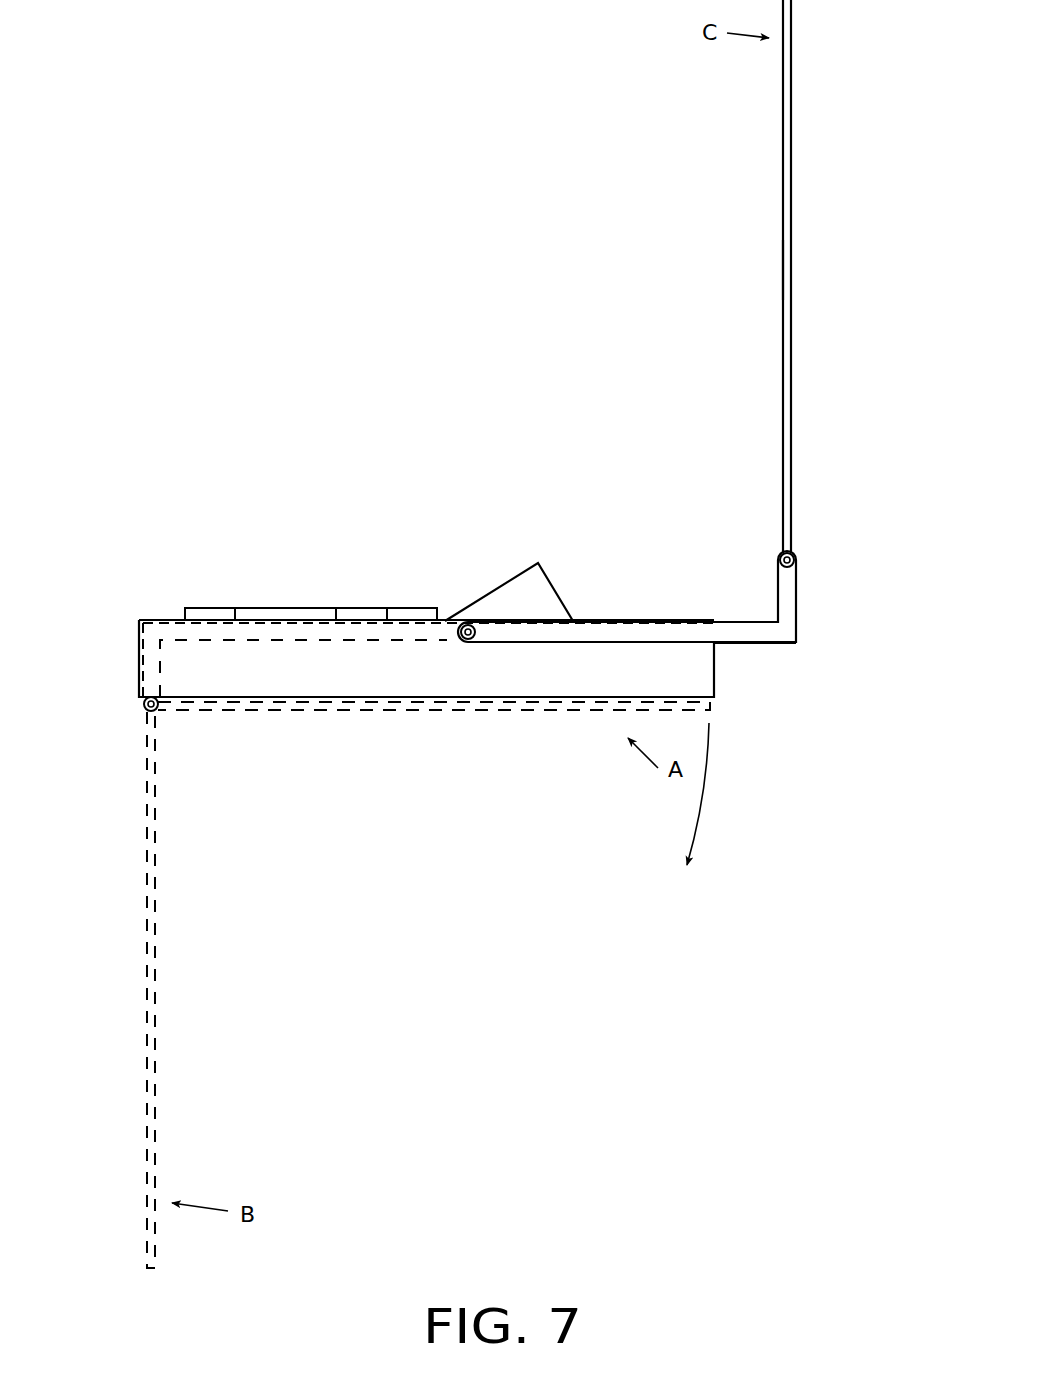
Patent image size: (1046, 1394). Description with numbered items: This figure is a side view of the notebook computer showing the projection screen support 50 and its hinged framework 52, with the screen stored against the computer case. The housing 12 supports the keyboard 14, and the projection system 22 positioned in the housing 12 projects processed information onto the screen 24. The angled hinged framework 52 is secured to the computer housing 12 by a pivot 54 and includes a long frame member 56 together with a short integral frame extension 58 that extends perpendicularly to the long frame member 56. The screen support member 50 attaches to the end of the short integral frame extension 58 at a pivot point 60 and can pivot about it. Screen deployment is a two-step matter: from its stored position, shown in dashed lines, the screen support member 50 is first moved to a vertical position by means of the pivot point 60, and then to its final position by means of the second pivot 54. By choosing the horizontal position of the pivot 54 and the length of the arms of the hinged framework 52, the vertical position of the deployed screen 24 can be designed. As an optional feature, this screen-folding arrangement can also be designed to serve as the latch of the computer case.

The housing 12 is at (138, 642).
The keyboard 14 is at (217, 608).
The projection system 22 is at (518, 574).
The screen 24 is at (783, 258).
The projection screen support 50 is at (793, 230).
The hinged framework 52 is at (755, 642).
The pivot 54 is at (470, 635).
The long frame member 56 is at (606, 637).
The short integral frame extension 58 is at (790, 610).
The pivot point 60 is at (791, 556).